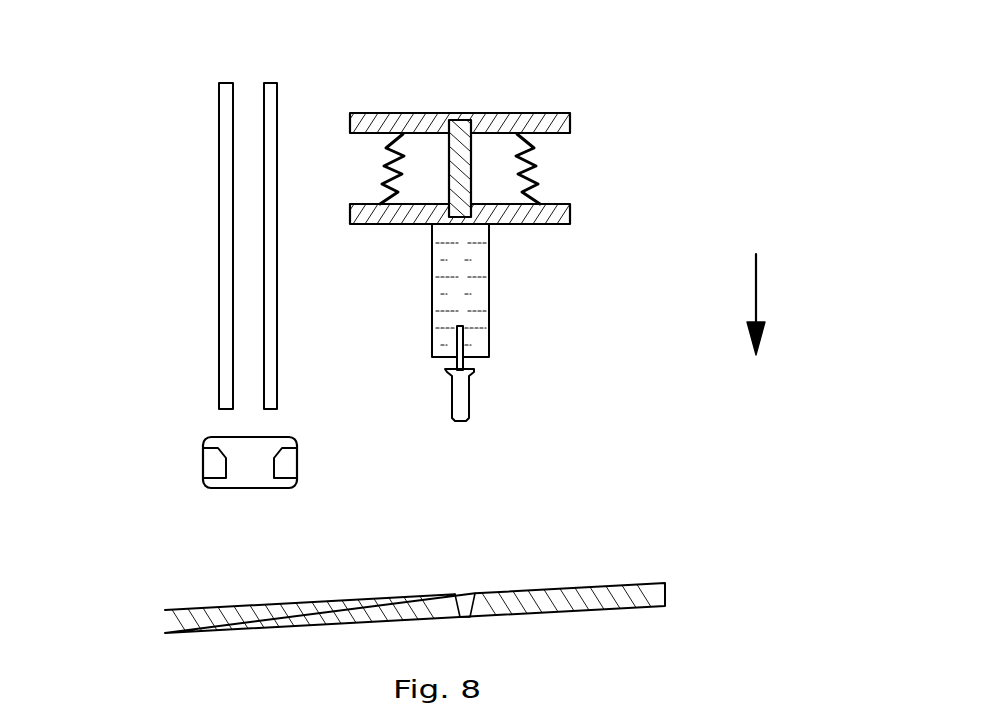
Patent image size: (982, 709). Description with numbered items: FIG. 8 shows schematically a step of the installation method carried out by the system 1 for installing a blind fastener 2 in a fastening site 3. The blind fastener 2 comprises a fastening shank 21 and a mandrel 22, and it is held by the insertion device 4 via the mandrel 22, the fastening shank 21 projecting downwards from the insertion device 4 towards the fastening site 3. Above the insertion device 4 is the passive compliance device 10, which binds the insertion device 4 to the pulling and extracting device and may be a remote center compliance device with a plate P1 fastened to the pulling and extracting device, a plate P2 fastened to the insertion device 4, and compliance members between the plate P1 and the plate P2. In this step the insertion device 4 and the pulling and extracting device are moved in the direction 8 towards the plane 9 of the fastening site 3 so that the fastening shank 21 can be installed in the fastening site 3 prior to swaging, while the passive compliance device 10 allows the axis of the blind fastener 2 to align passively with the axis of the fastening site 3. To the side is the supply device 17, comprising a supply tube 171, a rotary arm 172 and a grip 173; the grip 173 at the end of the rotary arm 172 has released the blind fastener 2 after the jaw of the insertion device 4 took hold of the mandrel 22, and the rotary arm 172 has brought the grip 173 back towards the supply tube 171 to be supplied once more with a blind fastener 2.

The system 1 is at (625, 100).
The passive compliance device 10 is at (562, 168).
The plate P1 is at (546, 113).
The plate P2 is at (366, 225).
The insertion device 4 is at (489, 272).
The blind fastener 2 is at (493, 413).
The mandrel 22 is at (462, 340).
The fastening shank 21 is at (456, 410).
The direction 8 is at (757, 288).
The supply device 17 is at (132, 314).
The supply tube 171 is at (221, 180).
The rotary arm 172 is at (200, 462).
The grip 173 is at (248, 484).
The plane 9 is at (624, 582).
The fastening site 3 is at (464, 593).